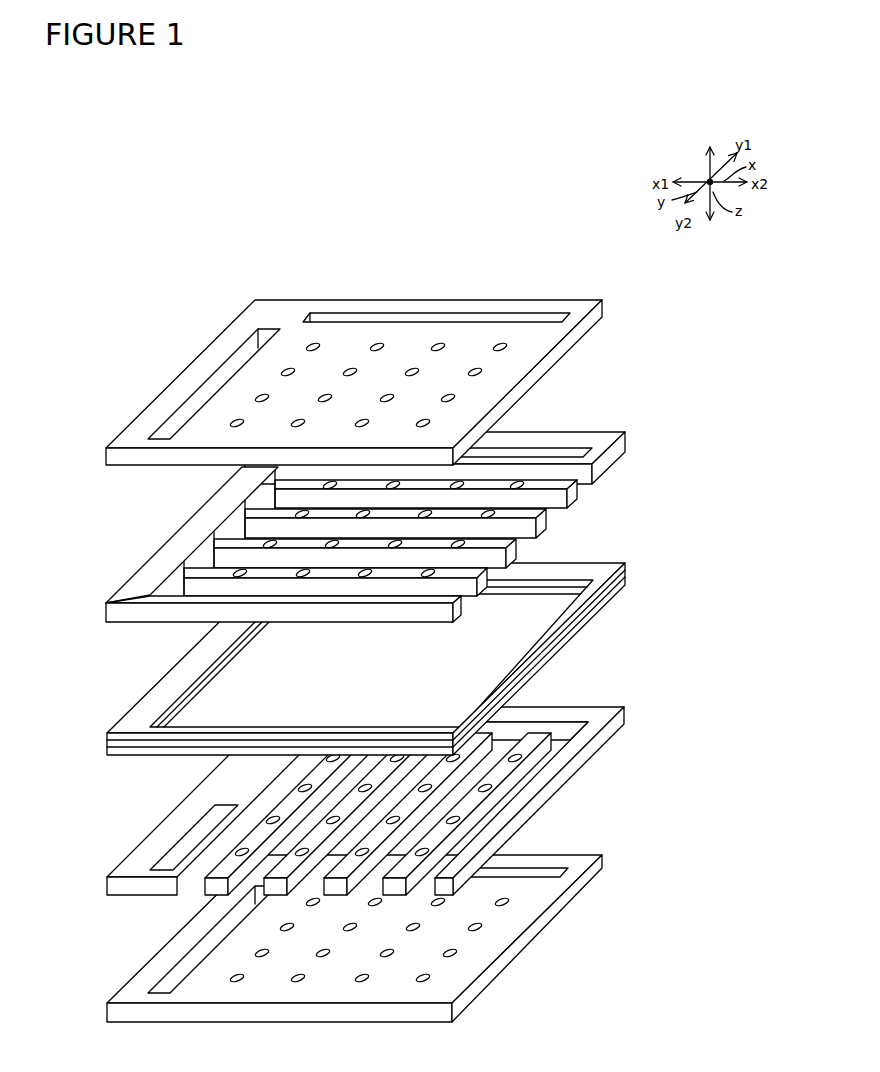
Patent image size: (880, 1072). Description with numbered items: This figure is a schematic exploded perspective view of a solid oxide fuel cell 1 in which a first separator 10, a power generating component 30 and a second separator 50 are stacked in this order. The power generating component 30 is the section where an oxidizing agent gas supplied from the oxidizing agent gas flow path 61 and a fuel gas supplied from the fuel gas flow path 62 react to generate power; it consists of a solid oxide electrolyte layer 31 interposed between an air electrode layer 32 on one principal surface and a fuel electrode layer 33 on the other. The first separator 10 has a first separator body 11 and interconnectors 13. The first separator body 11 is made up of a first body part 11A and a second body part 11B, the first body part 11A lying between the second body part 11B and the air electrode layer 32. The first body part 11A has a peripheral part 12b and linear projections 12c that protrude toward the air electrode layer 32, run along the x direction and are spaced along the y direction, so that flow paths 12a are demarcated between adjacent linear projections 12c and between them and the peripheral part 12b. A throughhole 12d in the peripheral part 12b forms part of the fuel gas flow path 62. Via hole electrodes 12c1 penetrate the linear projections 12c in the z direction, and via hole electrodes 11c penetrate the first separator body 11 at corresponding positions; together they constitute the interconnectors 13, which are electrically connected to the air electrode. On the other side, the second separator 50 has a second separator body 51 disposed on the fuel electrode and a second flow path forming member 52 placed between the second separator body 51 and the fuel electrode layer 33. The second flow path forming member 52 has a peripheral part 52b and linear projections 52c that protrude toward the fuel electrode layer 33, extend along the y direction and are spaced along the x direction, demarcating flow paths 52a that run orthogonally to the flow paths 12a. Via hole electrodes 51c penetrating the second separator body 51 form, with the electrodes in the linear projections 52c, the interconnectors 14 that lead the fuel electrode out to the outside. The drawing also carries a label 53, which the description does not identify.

The solid oxide fuel cell 1 is at (405, 617).
The first separator 10 is at (394, 357).
The first separator body 11 is at (414, 436).
The first body part 11A is at (406, 485).
The second body part 11B is at (607, 311).
The via hole electrodes 11c is at (504, 343).
The flow paths 12a is at (583, 478).
The peripheral part 12b is at (630, 440).
The linear projections 12c is at (544, 527).
The via hole electrodes 12c1 is at (518, 483).
The throughhole 12d is at (550, 453).
The interconnectors 13 is at (443, 343).
The interconnectors 14 is at (459, 955).
The power generating component 30 is at (415, 647).
The solid oxide electrolyte layer 31 is at (629, 572).
The air electrode layer 32 is at (628, 563).
The fuel electrode layer 33 is at (395, 662).
The second separator 50 is at (405, 834).
The second separator body 51 is at (393, 918).
The via hole electrodes 51c is at (507, 903).
The second flow path forming member 52 is at (384, 794).
The flow paths 52a is at (189, 879).
The peripheral part 52b is at (601, 702).
The linear projections 52c is at (512, 786).
The electrode strip 53 is at (524, 747).
The oxidizing agent gas flow path 61 is at (212, 382).
The fuel gas flow path 62 is at (422, 323).